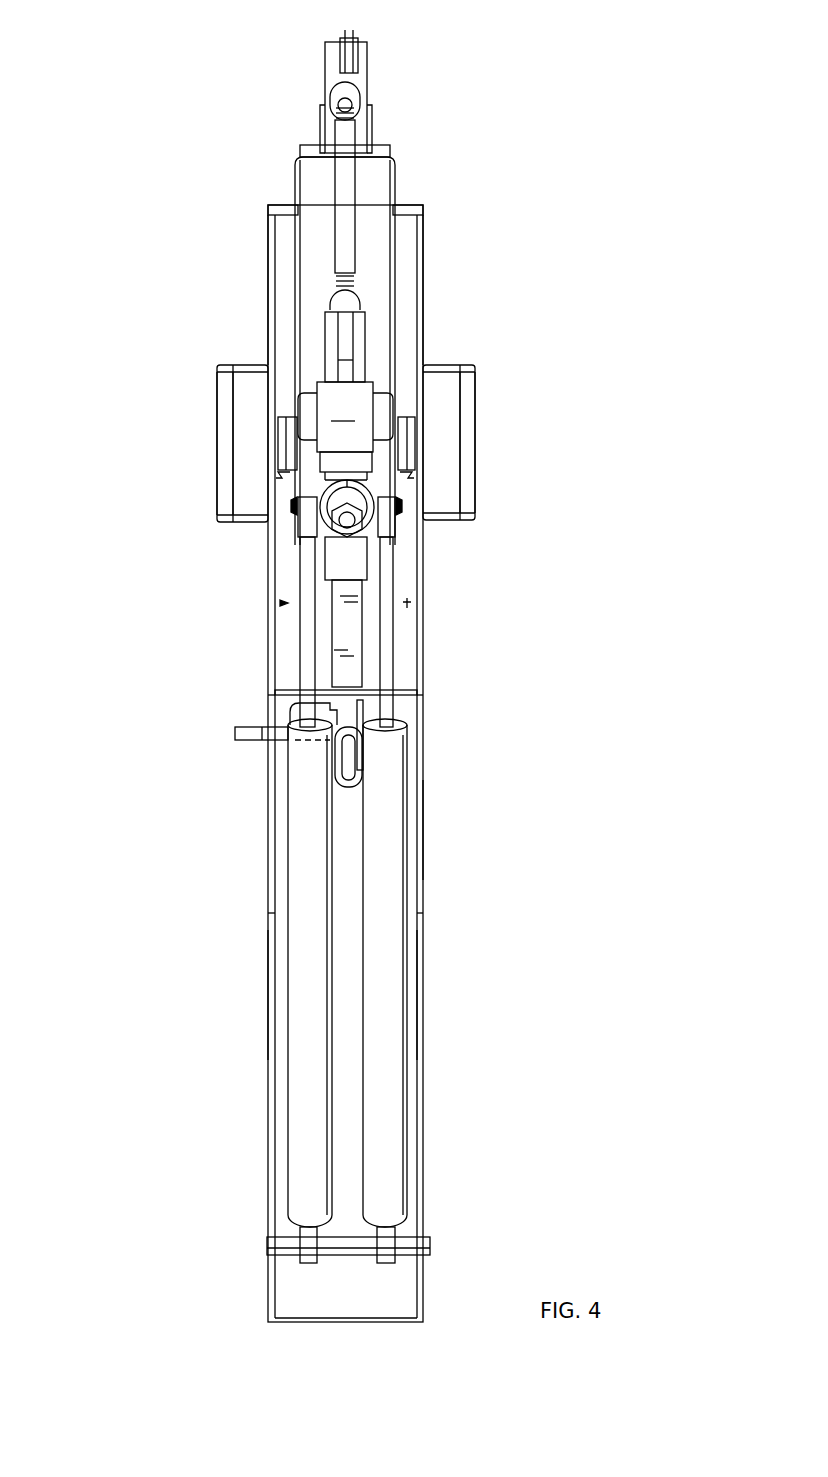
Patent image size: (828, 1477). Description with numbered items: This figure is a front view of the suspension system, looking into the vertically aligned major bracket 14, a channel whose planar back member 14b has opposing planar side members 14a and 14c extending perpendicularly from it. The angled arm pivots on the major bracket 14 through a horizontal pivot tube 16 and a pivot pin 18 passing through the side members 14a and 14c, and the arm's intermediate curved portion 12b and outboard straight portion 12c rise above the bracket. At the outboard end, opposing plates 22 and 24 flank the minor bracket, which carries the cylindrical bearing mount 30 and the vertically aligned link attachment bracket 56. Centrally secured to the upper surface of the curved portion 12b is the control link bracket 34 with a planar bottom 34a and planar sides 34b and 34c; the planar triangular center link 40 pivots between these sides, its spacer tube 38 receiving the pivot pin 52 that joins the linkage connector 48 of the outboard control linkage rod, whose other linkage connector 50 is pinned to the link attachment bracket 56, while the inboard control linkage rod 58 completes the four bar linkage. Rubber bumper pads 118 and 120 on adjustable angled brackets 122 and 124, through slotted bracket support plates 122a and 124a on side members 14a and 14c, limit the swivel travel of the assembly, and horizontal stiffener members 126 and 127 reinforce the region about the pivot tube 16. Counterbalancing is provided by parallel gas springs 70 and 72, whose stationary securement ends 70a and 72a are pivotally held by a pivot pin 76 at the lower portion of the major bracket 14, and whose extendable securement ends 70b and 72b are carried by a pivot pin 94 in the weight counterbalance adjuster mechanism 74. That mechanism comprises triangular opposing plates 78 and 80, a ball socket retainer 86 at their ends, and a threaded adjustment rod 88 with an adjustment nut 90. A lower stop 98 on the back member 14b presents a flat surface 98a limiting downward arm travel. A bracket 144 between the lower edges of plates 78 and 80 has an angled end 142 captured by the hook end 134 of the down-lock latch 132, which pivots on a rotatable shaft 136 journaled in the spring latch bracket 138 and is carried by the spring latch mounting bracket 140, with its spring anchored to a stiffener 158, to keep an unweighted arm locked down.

The major bracket 14 is at (222, 880).
The planar side member 14a is at (272, 996).
The planar back member 14b is at (412, 833).
The planar side member 14c is at (420, 970).
The intermediate curved portion 12b is at (380, 178).
The straight portion 12c is at (380, 328).
The control link bracket 34 is at (395, 88).
The planar bottom 34a is at (322, 157).
The planar side 34b is at (322, 130).
The planar side 34c is at (372, 128).
The spacer tube 38 is at (360, 40).
The center link 40 is at (319, 27).
The linkage connector 48 is at (365, 80).
The pivot pin 52 is at (318, 60).
The inboard control linkage rod 58 is at (345, 230).
The link attachment bracket 56 is at (345, 333).
The linkage connector 50 is at (330, 328).
The cylindrical bearing mount 30 is at (345, 431).
The plate 22 is at (300, 405).
The plate 24 is at (385, 405).
The pivot pin 18 is at (280, 437).
The pivot tube 16 is at (280, 446).
The adjustable angled bracket 122 is at (221, 419).
The bracket support plate 122a is at (265, 402).
The rubber bumper pad 118 is at (180, 400).
The adjustable angled bracket 124 is at (469, 421).
The bracket support plate 124a is at (428, 413).
The rubber bumper pad 120 is at (522, 412).
The horizontal stiffener member 126 is at (420, 473).
The plate 78 is at (321, 500).
The plate 80 is at (372, 490).
The ball socket retainer 86 is at (364, 512).
The threaded adjustment rod 88 is at (356, 524).
The adjustment nut 90 is at (356, 530).
The weight counterbalance adjuster mechanism 74 is at (560, 507).
The extendable securement end 70b is at (296, 522).
The extendable securement end 72b is at (397, 510).
The pivot pin 94 is at (293, 512).
The bracket 144 is at (340, 560).
The angled end 142 is at (335, 583).
The horizontal stiffener member 127 is at (410, 603).
The lower stop 98 is at (352, 667).
The flat surface 98a is at (352, 617).
The stiffener 158 is at (410, 688).
The spring latch bracket 138 is at (318, 712).
The rotatable shaft 136 is at (247, 722).
The spring latch mounting bracket 140 is at (364, 713).
The down-lock latch 132 is at (348, 780).
The hook end 134 is at (348, 742).
The gas spring 70 is at (300, 782).
The gas spring 72 is at (392, 788).
The pivot pin 76 is at (282, 1242).
The stationary securement end 70a is at (305, 1257).
The stationary securement end 72a is at (395, 1255).